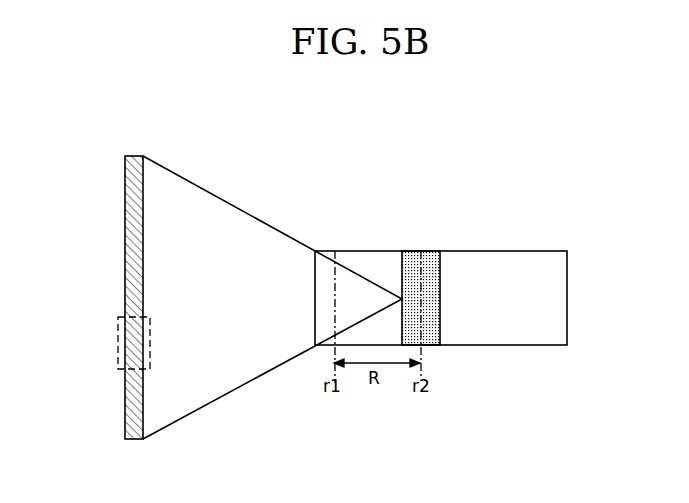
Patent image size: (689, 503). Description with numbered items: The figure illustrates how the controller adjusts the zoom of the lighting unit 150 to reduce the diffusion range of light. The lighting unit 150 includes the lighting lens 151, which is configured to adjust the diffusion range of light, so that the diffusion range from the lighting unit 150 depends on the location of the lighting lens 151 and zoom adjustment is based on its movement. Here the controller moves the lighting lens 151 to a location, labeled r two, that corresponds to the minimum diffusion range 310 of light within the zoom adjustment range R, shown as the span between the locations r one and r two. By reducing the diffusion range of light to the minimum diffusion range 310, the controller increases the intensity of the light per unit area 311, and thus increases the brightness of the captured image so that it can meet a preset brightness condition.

The minimum diffusion range 310 is at (136, 262).
The unit area 311 is at (120, 345).
The lighting unit 150 is at (567, 228).
The lighting lens 151 is at (421, 264).